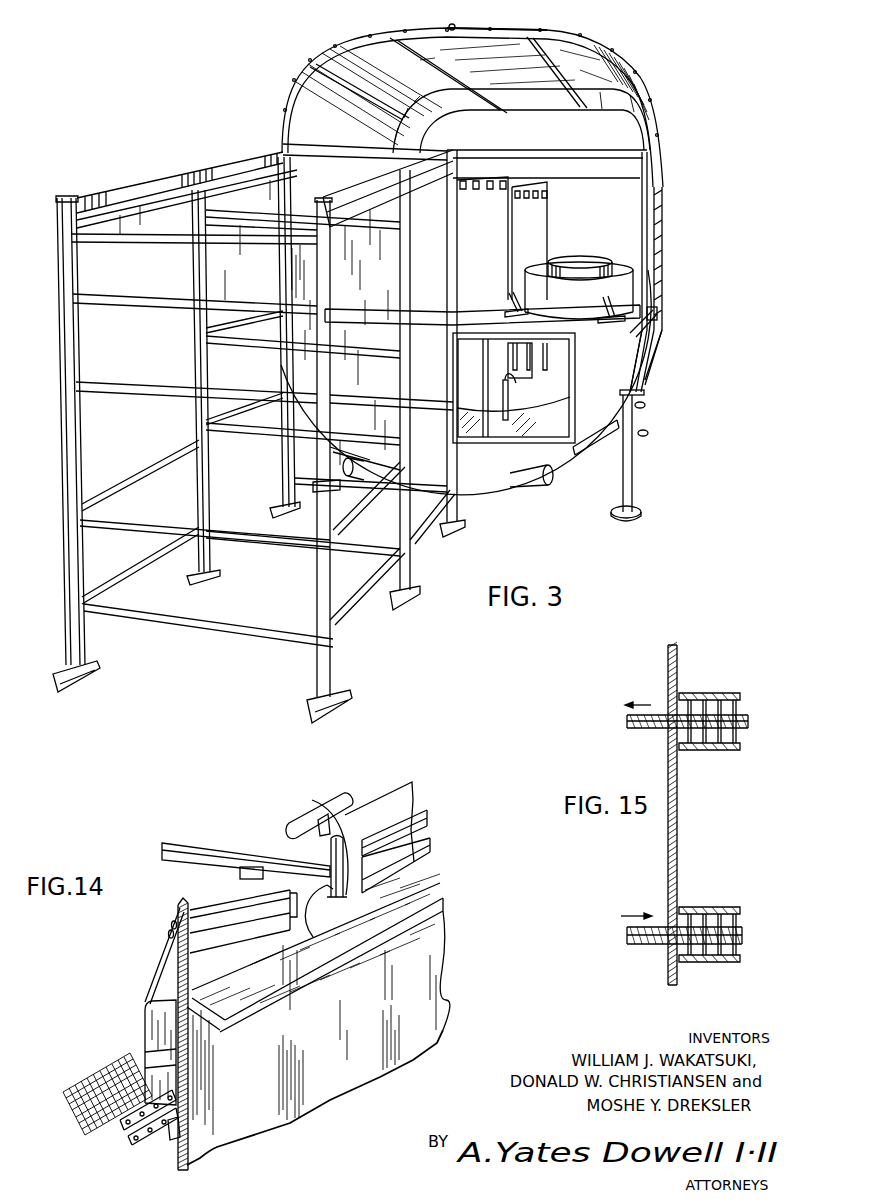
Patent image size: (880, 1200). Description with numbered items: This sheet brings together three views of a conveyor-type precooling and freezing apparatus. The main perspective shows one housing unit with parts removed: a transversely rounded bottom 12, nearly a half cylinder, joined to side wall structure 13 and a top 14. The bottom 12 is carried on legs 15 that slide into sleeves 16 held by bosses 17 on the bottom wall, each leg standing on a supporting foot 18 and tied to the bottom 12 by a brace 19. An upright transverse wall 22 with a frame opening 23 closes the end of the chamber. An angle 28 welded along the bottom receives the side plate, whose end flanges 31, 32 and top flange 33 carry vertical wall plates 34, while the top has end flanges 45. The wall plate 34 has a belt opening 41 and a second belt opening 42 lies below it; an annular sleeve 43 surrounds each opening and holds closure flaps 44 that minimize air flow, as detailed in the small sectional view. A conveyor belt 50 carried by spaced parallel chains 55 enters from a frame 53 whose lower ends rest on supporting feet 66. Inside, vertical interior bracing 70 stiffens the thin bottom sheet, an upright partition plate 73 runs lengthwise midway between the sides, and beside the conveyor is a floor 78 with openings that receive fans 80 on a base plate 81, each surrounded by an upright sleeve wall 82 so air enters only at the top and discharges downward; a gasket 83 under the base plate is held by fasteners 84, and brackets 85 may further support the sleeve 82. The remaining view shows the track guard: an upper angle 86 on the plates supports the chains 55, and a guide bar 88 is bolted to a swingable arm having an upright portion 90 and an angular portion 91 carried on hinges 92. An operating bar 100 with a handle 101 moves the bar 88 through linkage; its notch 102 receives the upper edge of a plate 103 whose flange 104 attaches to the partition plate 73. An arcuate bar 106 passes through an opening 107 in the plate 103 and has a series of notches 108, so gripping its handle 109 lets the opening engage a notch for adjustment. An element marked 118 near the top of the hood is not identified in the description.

In FIG. 3, the bottom 12 is at (520, 480).
In FIG. 3, the side wall structure 13 is at (657, 272).
In FIG. 3, the top 14 is at (605, 63).
In FIG. 3, the legs 15 is at (633, 418).
In FIG. 3, the sleeves 16 is at (632, 393).
In FIG. 3, the bosses 17 is at (637, 370).
In FIG. 3, the supporting foot 18 is at (637, 505).
In FIG. 3, the brace 19 is at (618, 428).
In FIG. 3, the upright transverse walls 22 is at (512, 388).
In FIG. 3, the frame opening 23 is at (575, 390).
In FIG. 3, the angle 28 is at (645, 327).
In FIG. 3, the end flanges 31 is at (640, 213).
In FIG. 3, the end flanges 32 is at (650, 205).
In FIG. 3, the top flange 33 is at (655, 222).
In FIG. 15, the vertical wall plates 34 is at (668, 658).
In FIG. 3, the belt opening 41 is at (297, 158).
In FIG. 3, the second belt opening 42 is at (364, 312).
In FIG. 15, the annular sleeve 43 is at (719, 693).
In FIG. 15, the closure flaps 44 is at (738, 704).
In FIG. 3, the end flanges 45 is at (582, 34).
In FIG. 14, the conveyor belt 50 is at (67, 1097).
In FIG. 3, the frame 53 is at (259, 428).
In FIG. 14, the chains 55 is at (115, 1128).
In FIG. 3, the supporting feet 66 is at (272, 516).
In FIG. 3, the vertical interior bracing 70 is at (510, 380).
In FIG. 3, the upright partition plates 73 is at (503, 234).
In FIG. 14, the upright partition plates 73 is at (437, 969).
In FIG. 3, the floor 78 is at (483, 316).
In FIG. 3, the blowers or fans 80 is at (586, 257).
In FIG. 3, the base plate 81 is at (645, 313).
In FIG. 3, the upright sleeve forming wall 82 is at (579, 290).
In FIG. 3, the gasket 83 is at (490, 353).
In FIG. 3, the fasteners 84 is at (516, 310).
In FIG. 3, the brackets 85 is at (606, 304).
In FIG. 14, the upper angles 86 is at (170, 1135).
In FIG. 14, the guide bars 88 is at (163, 1068).
In FIG. 14, the upright portions 90 is at (145, 1016).
In FIG. 14, the angular portions 91 is at (160, 980).
In FIG. 14, the hinges 92 is at (175, 930).
In FIG. 14, the operating bar 100 is at (226, 855).
In FIG. 14, the handle 101 is at (342, 895).
In FIG. 14, the notch 102 is at (262, 873).
In FIG. 14, the plate 103 is at (190, 908).
In FIG. 14, the flange 104 is at (316, 966).
In FIG. 14, the arcuate bar 106 is at (325, 825).
In FIG. 14, the opening 107 is at (325, 917).
In FIG. 14, the notches 108 is at (329, 834).
In FIG. 14, the handle 109 is at (287, 828).
In FIG. 3, the rivet 118 is at (452, 27).